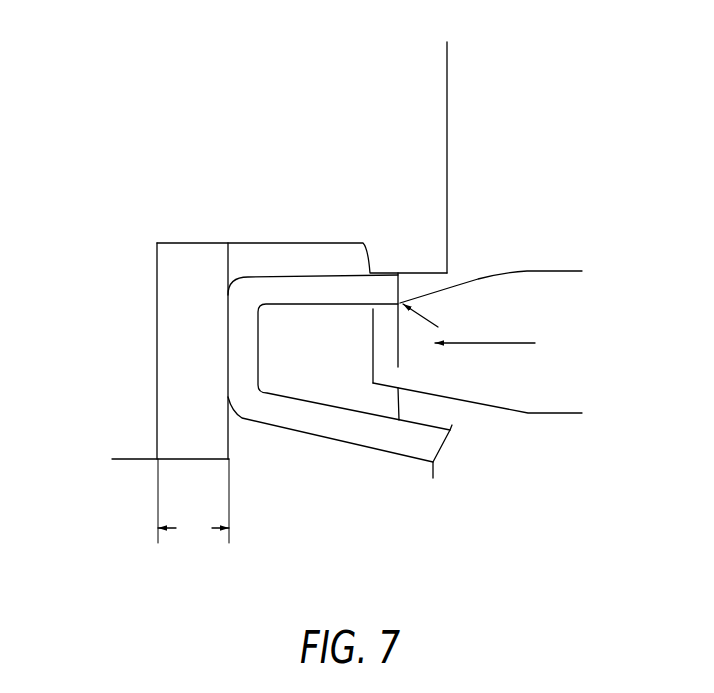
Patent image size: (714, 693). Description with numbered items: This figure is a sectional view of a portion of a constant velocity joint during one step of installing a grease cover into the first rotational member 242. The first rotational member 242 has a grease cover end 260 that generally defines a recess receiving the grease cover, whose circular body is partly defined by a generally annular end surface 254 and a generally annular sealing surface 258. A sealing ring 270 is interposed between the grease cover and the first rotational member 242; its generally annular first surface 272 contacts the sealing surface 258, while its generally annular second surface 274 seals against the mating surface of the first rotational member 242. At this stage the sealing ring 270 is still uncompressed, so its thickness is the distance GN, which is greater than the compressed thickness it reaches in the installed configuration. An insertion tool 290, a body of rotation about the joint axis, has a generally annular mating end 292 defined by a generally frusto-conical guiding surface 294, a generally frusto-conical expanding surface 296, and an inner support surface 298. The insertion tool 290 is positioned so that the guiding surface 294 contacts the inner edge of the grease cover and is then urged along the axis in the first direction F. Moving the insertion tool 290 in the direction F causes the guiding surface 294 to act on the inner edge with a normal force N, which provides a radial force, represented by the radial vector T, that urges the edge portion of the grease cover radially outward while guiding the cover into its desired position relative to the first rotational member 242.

The first rotational member 242 is at (418, 80).
The end surface 254 is at (404, 284).
The sealing surface 258 is at (225, 352).
The grease cover end 260 is at (473, 80).
The sealing ring 270 is at (197, 262).
The first surface 272 is at (234, 308).
The second surface 274 is at (153, 290).
The insertion tool 290 is at (491, 344).
The mating end 292 is at (385, 345).
The guiding surface 294 is at (394, 306).
The expanding surface 296 is at (494, 269).
The inner support surface 298 is at (493, 415).
The normal force N is at (427, 313).
The first direction F is at (512, 343).
The radial vector T is at (405, 357).
The uncompressed thickness distance GN is at (193, 502).